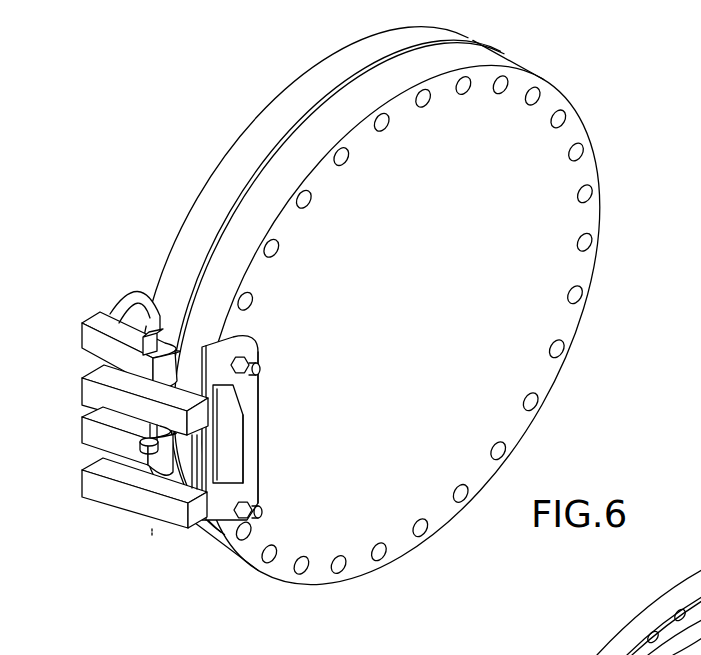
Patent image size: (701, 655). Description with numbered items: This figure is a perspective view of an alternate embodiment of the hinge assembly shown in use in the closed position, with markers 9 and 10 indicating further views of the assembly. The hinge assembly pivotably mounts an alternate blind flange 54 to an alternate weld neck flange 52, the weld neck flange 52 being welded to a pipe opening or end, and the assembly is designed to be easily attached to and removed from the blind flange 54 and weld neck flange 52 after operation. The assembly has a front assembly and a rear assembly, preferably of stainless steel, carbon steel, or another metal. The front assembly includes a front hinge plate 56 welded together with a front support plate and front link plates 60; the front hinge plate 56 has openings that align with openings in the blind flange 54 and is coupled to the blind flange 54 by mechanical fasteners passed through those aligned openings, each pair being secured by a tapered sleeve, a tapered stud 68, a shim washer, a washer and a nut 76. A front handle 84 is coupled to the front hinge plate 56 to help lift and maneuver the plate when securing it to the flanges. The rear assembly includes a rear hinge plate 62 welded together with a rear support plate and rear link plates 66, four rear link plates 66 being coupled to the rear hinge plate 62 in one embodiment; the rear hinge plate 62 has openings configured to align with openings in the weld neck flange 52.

The alternate weld neck flange 52 is at (324, 72).
The alternate blind flange 54 is at (574, 130).
The front hinge plate 56 is at (248, 389).
The front link plates 60 is at (196, 437).
The rear hinge plate 62 is at (136, 291).
The rear link plates 66 is at (95, 322).
The tapered stud 68 is at (260, 373).
The nut 76 is at (250, 353).
The front handle 84 is at (256, 458).
The section line 9- 9 is at (192, 122).
The section line 10- 10 is at (628, 190).